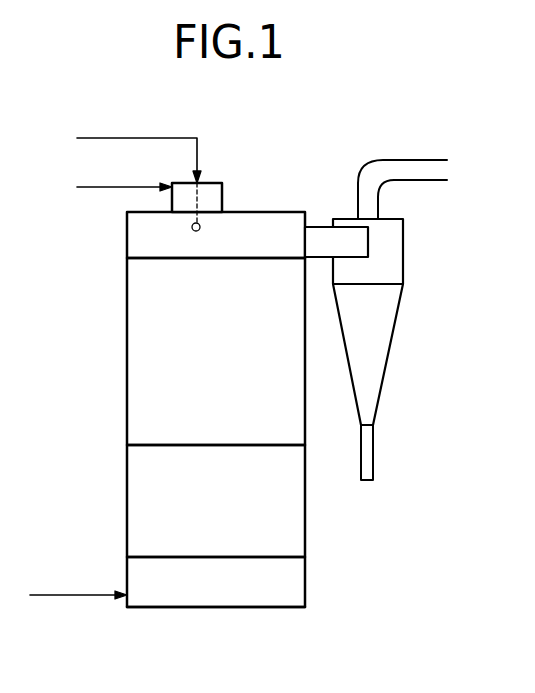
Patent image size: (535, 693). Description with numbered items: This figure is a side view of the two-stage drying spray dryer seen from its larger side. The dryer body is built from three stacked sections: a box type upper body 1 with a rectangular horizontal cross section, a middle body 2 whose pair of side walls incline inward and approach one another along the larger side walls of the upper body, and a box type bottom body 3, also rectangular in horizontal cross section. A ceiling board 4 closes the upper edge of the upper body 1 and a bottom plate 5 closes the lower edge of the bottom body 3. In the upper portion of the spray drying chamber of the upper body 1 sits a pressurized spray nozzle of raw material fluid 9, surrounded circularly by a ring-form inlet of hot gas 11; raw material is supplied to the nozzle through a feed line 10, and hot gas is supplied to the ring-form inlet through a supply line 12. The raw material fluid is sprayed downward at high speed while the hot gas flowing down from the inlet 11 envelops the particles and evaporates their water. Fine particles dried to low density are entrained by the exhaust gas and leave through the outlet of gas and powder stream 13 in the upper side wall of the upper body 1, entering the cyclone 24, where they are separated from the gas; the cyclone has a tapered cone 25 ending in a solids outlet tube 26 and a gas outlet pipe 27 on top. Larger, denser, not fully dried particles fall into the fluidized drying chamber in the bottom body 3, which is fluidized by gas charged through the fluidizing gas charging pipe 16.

The upper body 1 is at (127, 380).
The middle body 2 is at (127, 523).
The bottom body 3 is at (127, 585).
The ceiling board 4 is at (263, 211).
The bottom plate 5 is at (217, 609).
The pressurized spray nozzle of raw material fluid 9 is at (192, 229).
The feed line 10 is at (121, 137).
The ring-form inlet of hot gas 11 is at (172, 203).
The inlet line 12 is at (140, 187).
The outlet of gas and powder stream 13 is at (312, 226).
The fluidizing gas charging pipe 16 is at (92, 597).
The cyclone 24 is at (405, 257).
The cyclone cone 25 is at (390, 364).
The solids outlet tube 26 is at (373, 457).
The gas outlet pipe 27 is at (410, 160).